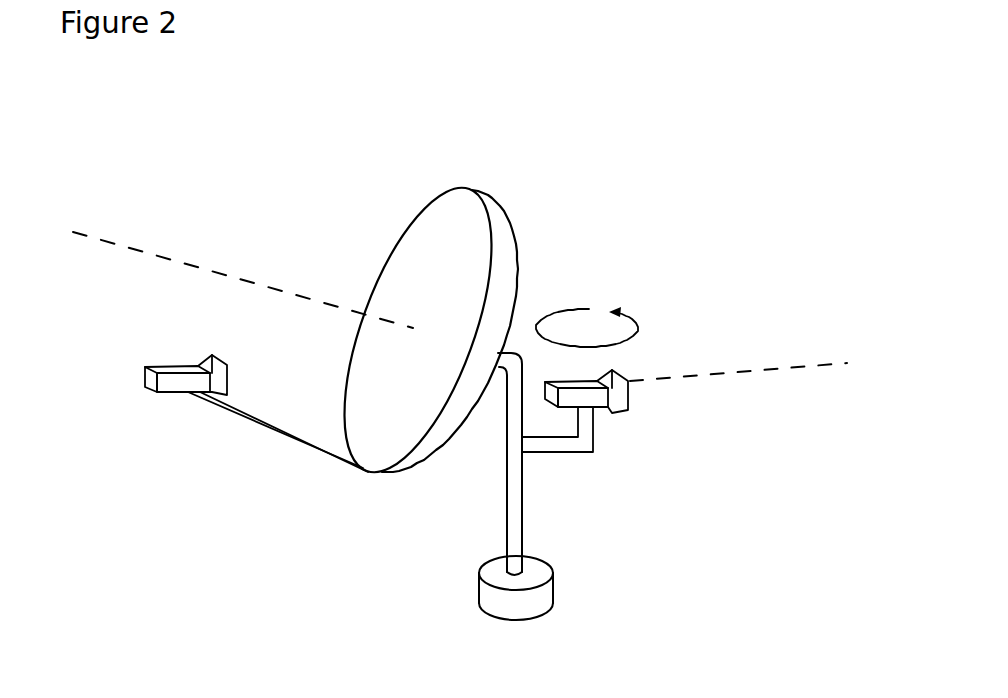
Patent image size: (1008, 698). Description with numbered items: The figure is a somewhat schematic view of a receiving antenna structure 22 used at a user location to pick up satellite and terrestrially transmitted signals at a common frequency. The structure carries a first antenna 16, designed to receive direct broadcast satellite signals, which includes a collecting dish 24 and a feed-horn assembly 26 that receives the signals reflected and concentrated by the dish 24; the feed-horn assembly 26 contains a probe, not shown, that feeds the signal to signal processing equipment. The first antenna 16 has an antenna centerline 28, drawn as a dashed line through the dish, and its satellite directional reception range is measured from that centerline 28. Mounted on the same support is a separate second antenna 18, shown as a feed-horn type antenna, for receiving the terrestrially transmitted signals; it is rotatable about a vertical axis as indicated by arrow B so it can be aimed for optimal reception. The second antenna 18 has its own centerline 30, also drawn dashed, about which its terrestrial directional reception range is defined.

The first antenna 16 is at (440, 323).
The second antenna 18 is at (650, 355).
The antenna structure 22 is at (522, 258).
The collecting dish 24 is at (473, 190).
The feed-horn assembly 26 is at (220, 380).
The antenna centerline 28 is at (203, 270).
The centerline 30 is at (747, 370).
The rotation about a vertical axis B is at (587, 338).